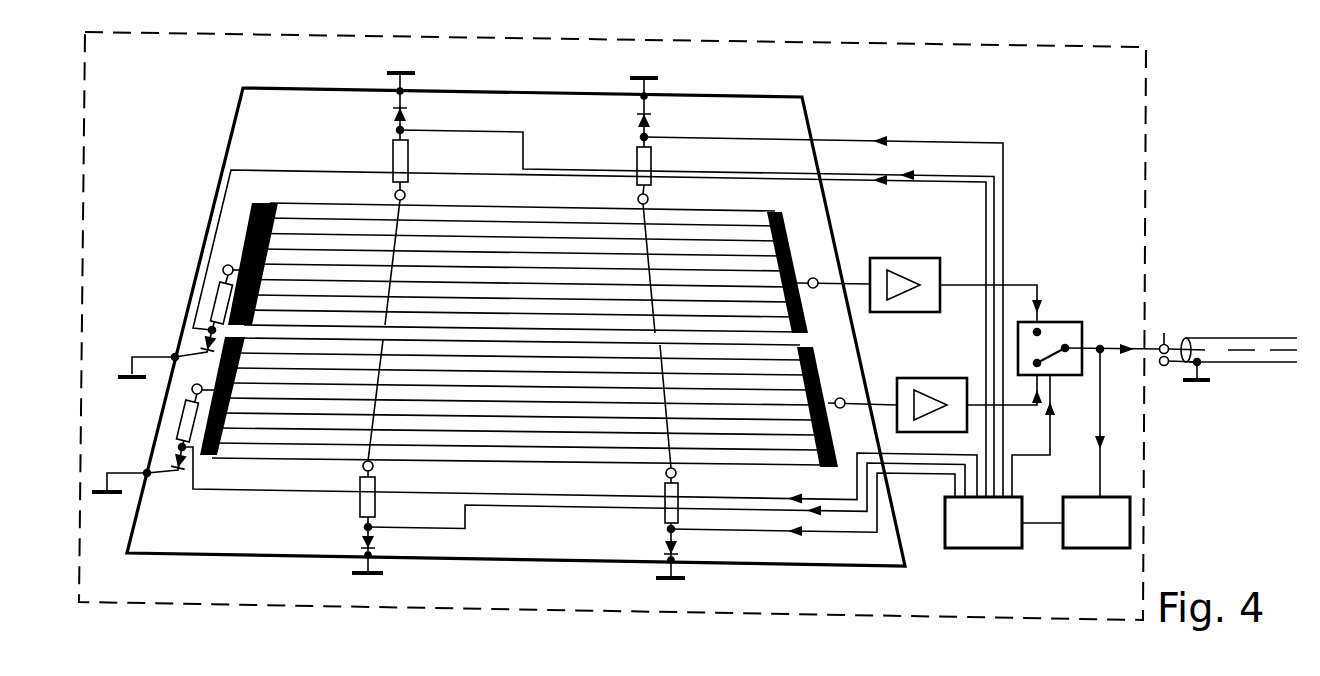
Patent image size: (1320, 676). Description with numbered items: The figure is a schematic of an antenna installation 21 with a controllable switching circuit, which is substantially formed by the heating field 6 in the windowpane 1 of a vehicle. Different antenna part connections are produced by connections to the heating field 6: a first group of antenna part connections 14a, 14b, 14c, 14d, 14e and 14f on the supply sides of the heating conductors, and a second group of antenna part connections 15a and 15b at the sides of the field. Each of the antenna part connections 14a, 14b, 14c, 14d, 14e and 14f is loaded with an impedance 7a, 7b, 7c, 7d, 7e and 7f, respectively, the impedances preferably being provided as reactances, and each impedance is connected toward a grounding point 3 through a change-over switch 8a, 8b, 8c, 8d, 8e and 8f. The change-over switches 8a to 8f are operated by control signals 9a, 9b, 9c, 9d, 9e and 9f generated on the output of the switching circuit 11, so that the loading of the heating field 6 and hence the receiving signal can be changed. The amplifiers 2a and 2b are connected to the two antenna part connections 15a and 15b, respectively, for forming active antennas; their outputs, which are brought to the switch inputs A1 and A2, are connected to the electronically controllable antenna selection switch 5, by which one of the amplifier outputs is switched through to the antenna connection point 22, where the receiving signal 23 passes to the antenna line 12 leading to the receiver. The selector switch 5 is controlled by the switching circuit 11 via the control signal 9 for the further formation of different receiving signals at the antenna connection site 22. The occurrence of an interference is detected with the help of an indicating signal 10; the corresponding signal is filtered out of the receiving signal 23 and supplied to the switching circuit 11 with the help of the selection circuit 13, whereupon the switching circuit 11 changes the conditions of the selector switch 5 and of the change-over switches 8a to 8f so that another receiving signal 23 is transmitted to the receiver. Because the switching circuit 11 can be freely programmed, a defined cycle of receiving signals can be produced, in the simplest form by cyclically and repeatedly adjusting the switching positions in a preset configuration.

The windowpane 1 is at (516, 327).
The amplifier 2a is at (905, 273).
The amplifier 2b is at (932, 393).
The grounding point 3 is at (661, 327).
The selector switch 5 is at (1050, 348).
The heating field 6 is at (519, 335).
The impedance 7a is at (408, 158).
The impedance 7b is at (645, 160).
The impedance 7c is at (675, 513).
The impedance 7d is at (376, 505).
The impedance 7e is at (216, 300).
The impedance 7f is at (183, 421).
The change-over switch 8a is at (408, 118).
The change-over switch 8b is at (652, 121).
The change-over switch 8c is at (682, 546).
The change-over switch 8d is at (376, 540).
The change-over switch 8e is at (203, 343).
The change-over switch 8f is at (172, 461).
The control signal 9 is at (1041, 436).
The control signal 9a is at (697, 313).
The control signal 9b is at (823, 307).
The control signal 9c is at (813, 516).
The control signal 9d is at (666, 497).
The control signal 9e is at (589, 333).
The control signal 9f is at (579, 475).
The indicating signal 10 is at (1113, 423).
The switching circuit 11 is at (1004, 522).
The antenna line 12 is at (1203, 342).
The selection circuit 13 is at (1096, 522).
The antenna part connection 14a is at (406, 195).
The antenna part connection 14b is at (649, 199).
The antenna part connection 14c is at (677, 474).
The antenna part connection 14d is at (374, 466).
The antenna part connection 14e is at (230, 257).
The antenna part connection 14f is at (203, 377).
The antenna part connection 15a is at (833, 270).
The antenna part connection 15b is at (860, 391).
The antenna installation 21 is at (612, 326).
The antenna connection point 22 is at (1173, 334).
The receiving signal 23 is at (1114, 337).
The switch input A1 is at (1009, 296).
The switch input A2 is at (1008, 410).